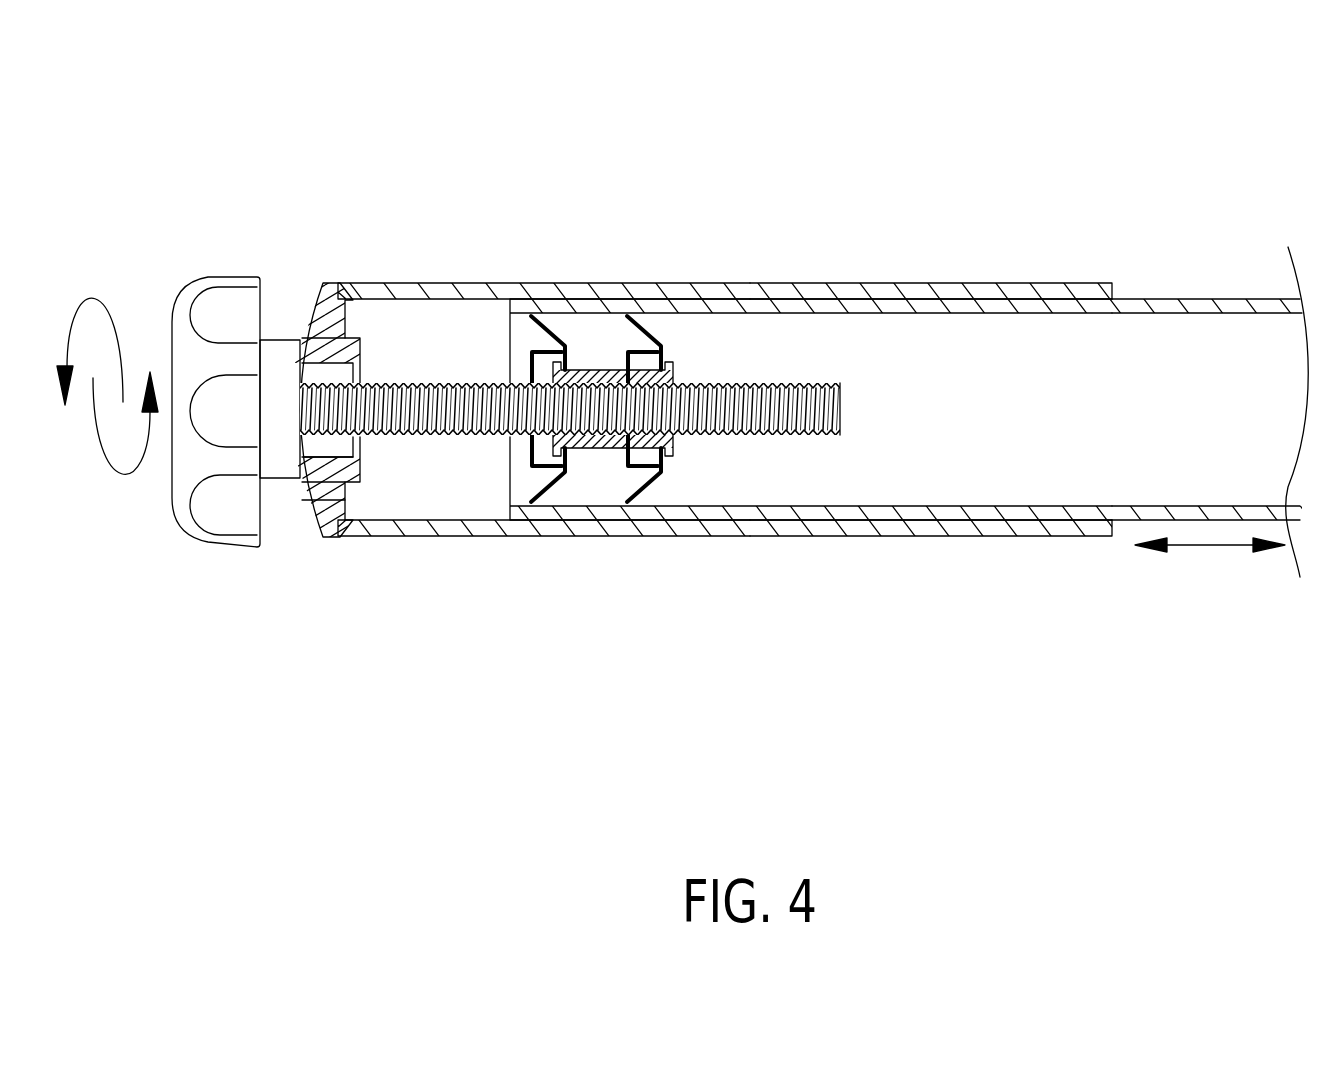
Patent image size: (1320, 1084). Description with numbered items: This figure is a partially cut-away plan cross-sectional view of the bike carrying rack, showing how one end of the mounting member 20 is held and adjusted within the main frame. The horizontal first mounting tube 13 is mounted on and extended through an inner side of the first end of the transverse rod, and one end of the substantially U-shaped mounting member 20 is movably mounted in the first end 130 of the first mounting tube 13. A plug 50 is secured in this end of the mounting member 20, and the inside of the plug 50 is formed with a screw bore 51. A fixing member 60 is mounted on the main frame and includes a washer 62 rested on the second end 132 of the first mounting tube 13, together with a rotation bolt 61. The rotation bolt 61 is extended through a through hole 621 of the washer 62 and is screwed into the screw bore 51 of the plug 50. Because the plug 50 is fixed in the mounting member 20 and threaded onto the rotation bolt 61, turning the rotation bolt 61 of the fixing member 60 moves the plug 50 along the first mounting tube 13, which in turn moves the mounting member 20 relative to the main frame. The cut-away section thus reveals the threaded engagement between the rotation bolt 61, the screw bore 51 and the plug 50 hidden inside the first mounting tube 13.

The first mounting tube 13 is at (895, 283).
The first end of the first mounting tube 130 is at (1050, 292).
The second end of the first mounting tube 132 is at (441, 292).
The mounting member 20 is at (1162, 298).
The plug 50 is at (590, 368).
The screw bore 51 is at (637, 365).
The fixing member 60 is at (281, 338).
The rotation bolt 61 is at (233, 297).
The washer 62 is at (328, 290).
The through hole 621 is at (330, 440).